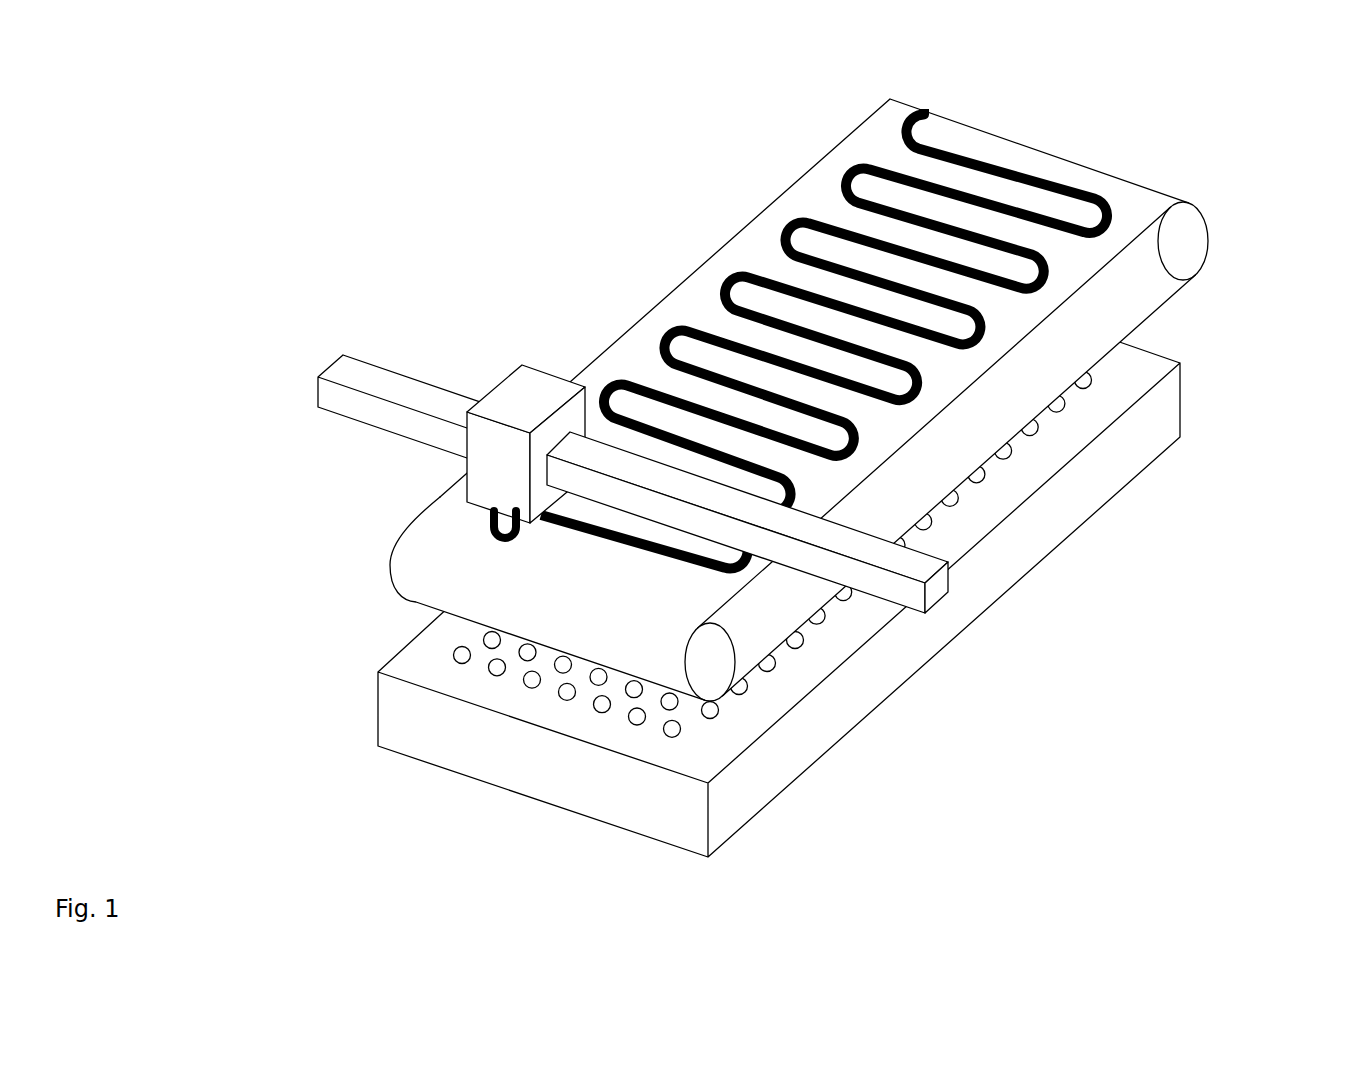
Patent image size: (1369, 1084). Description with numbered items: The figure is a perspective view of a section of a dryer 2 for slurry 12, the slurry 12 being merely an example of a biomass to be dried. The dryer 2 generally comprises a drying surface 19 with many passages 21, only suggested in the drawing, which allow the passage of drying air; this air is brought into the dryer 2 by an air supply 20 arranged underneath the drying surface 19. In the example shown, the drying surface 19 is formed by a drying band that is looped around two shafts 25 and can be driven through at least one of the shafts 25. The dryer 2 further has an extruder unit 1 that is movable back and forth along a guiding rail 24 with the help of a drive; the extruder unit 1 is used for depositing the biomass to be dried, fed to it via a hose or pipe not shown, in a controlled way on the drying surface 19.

The extruder unit 1 is at (518, 381).
The dryer 2 is at (758, 469).
The slurry 12 is at (1053, 187).
The drying surface 19 is at (639, 339).
The air supply 20 is at (397, 712).
The passages 21 is at (432, 562).
The guiding rail 24 is at (337, 398).
The shafts 25 is at (1192, 234).